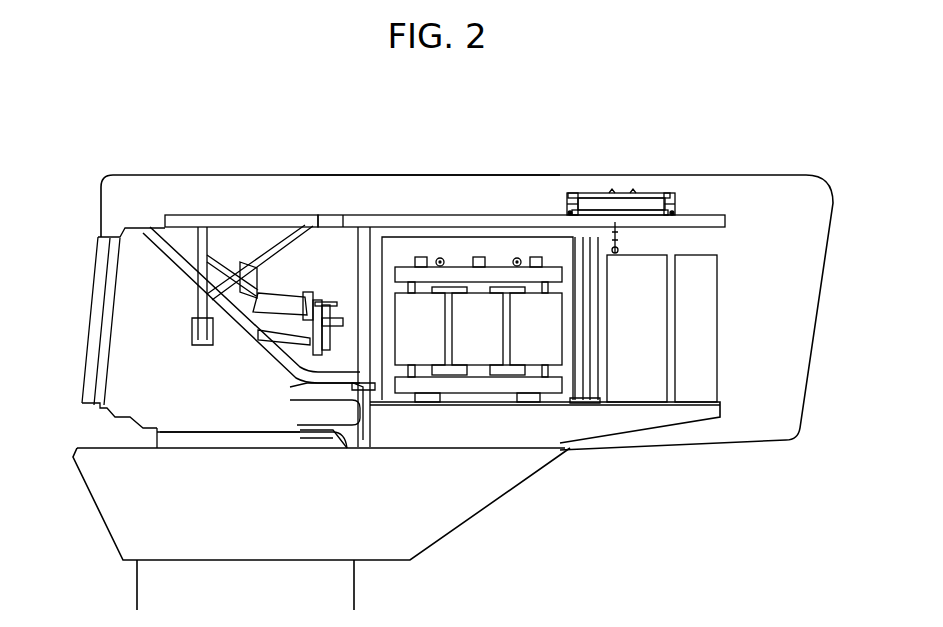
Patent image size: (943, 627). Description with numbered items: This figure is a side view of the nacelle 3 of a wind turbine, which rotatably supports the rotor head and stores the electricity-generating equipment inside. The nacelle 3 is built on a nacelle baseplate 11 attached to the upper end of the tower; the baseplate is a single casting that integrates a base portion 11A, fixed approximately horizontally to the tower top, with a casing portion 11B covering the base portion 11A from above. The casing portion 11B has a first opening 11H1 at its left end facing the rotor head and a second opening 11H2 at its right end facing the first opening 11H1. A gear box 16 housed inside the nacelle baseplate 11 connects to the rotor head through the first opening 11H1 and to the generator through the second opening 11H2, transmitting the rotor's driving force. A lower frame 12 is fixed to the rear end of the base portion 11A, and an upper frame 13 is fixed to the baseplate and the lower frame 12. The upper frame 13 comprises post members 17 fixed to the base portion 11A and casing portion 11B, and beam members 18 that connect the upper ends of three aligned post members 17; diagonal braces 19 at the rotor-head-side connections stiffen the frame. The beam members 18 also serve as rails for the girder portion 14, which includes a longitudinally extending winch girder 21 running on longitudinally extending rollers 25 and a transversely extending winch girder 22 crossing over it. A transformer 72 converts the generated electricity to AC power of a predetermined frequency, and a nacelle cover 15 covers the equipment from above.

The nacelle 3 is at (740, 170).
The nacelle baseplate 11 is at (290, 513).
The base portion 11A is at (253, 443).
The casing portion 11B is at (201, 403).
The first opening 11H1 is at (90, 310).
The second opening 11H2 is at (186, 246).
The lower frame 12 is at (657, 422).
The upper frame 13 is at (374, 140).
The girder portion 14 is at (663, 126).
The nacelle cover 15 is at (418, 174).
The gear box 16 is at (292, 293).
The post members 17 is at (368, 234).
The beam members 18 is at (320, 214).
The diagonal braces 19 is at (257, 249).
The longitudinally extending winch girder 21 is at (600, 205).
The transversely extending winch girder 22 is at (645, 197).
The longitudinally extending rollers 25 is at (566, 208).
The transformer 72 is at (453, 268).